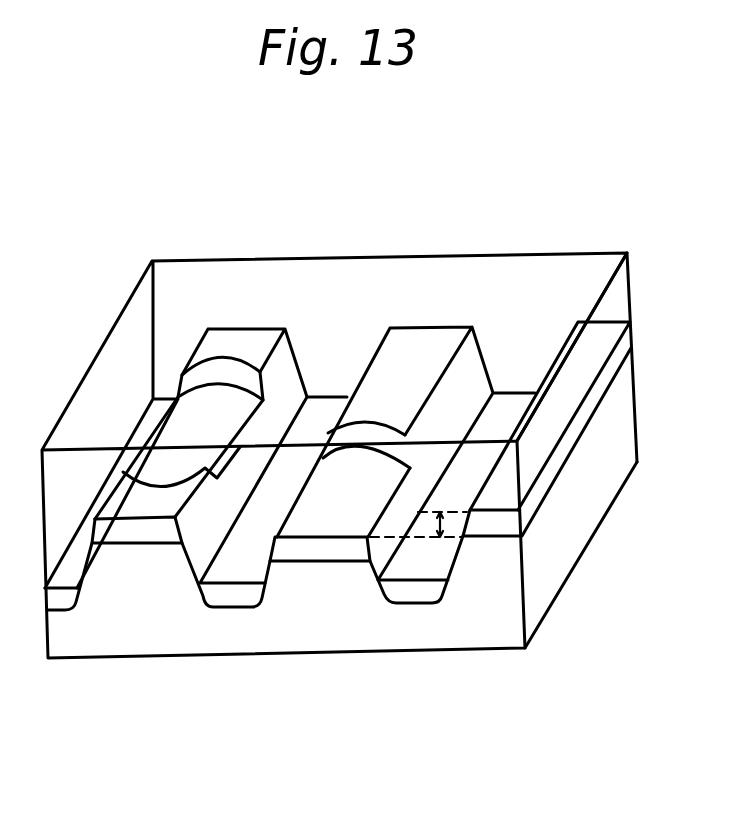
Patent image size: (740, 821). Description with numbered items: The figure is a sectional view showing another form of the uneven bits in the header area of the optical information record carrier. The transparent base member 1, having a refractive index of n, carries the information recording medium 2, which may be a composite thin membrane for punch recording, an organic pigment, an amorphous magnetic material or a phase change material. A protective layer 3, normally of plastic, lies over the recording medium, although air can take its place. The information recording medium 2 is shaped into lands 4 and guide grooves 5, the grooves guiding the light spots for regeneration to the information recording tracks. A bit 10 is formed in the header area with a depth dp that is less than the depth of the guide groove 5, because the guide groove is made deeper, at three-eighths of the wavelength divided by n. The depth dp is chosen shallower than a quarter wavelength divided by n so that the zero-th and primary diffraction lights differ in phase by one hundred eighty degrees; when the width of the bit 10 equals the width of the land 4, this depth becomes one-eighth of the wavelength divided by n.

The transparent base member 1 is at (512, 268).
The information recording medium 2 is at (532, 512).
The protective layer 3 is at (588, 507).
The land 4 is at (140, 547).
The guide groove 5 is at (237, 612).
The bit 10 is at (215, 405).
The depth of the bit dp is at (440, 522).